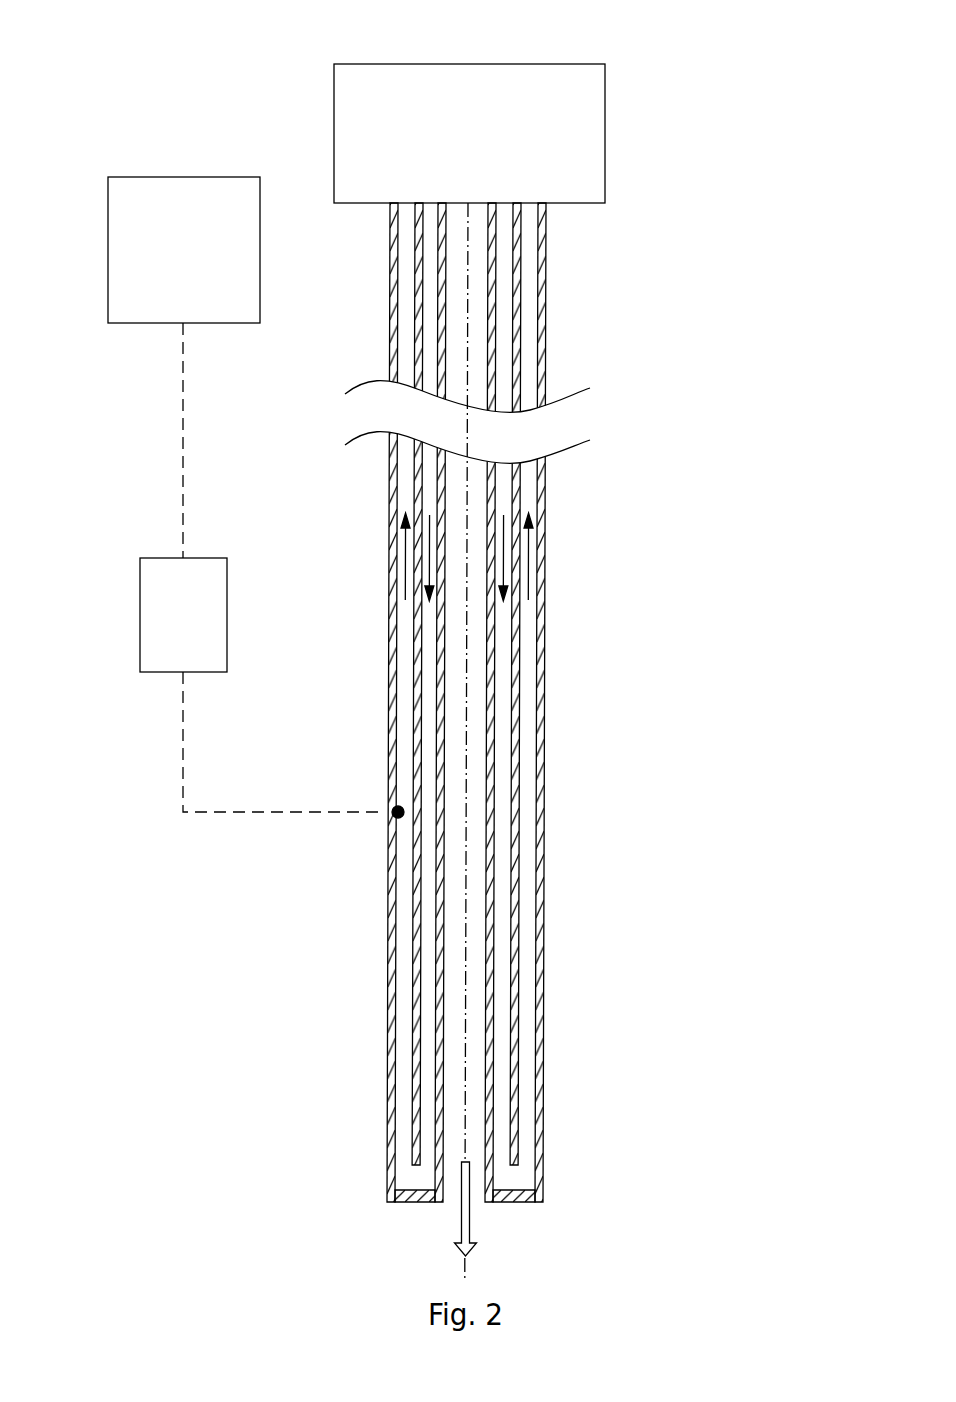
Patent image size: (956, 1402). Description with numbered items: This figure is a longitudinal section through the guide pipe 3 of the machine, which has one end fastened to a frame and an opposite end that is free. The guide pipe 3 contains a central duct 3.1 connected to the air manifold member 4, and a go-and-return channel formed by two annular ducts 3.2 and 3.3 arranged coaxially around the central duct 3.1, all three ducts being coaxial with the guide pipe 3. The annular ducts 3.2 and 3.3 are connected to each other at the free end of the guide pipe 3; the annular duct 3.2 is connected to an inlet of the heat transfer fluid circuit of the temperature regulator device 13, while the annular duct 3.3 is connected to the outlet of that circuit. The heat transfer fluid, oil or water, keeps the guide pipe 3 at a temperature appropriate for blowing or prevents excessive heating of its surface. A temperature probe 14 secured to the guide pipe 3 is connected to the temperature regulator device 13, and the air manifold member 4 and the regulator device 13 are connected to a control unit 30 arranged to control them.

The guide pipe 3 is at (550, 740).
The central duct 3.1 is at (477, 772).
The annular duct 3.2 is at (502, 833).
The annular duct 3.3 is at (525, 892).
The air manifold member 4 is at (582, 77).
The temperature regulator device 13 is at (213, 568).
The temperature probe 14 is at (400, 822).
The control unit 30 is at (210, 187).